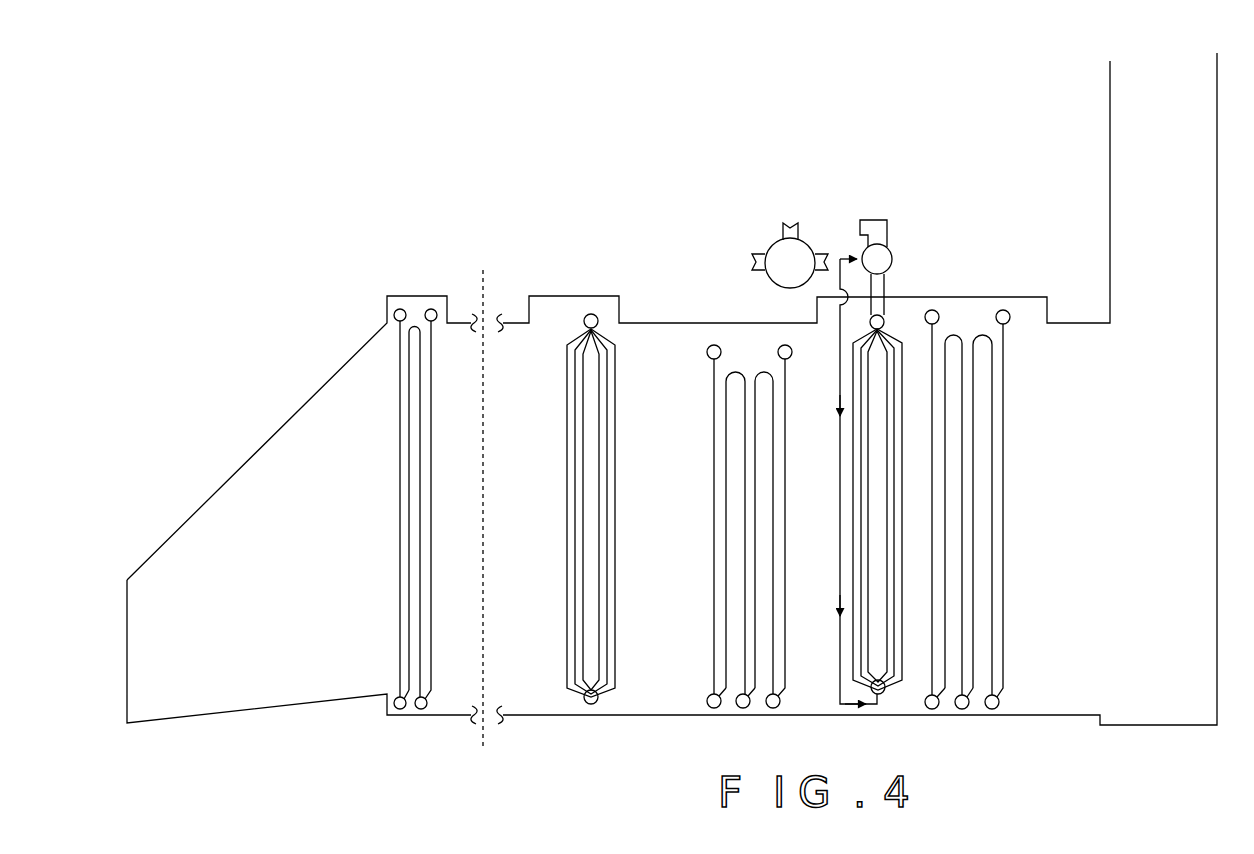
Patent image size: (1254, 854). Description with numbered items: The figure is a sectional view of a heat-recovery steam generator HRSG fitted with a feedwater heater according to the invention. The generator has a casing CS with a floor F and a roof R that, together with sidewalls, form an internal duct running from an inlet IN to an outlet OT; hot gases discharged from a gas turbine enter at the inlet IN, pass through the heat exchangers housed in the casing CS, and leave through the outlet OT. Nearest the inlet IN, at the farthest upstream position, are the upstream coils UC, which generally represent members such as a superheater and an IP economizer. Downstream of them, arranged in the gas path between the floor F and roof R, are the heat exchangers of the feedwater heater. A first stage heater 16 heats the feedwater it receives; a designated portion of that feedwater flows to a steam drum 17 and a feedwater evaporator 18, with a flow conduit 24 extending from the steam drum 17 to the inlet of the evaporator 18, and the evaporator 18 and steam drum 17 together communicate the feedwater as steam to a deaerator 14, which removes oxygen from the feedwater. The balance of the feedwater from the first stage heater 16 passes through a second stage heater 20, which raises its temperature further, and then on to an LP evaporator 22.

The deaerator 14 is at (765, 243).
The first stage heater 16 is at (1003, 465).
The steam drum 17 is at (893, 253).
The feedwater evaporator 18 is at (903, 694).
The second stage heater 20 is at (707, 672).
The LP evaporator 22 is at (562, 662).
The flow conduit 24 is at (840, 553).
The heat-recovery steam generator HRSG is at (587, 228).
The roof R is at (662, 322).
The floor F is at (652, 715).
The casing CS is at (979, 267).
The upstream coils UC is at (383, 532).
The inlet IN is at (127, 616).
The outlet OT is at (1052, 518).